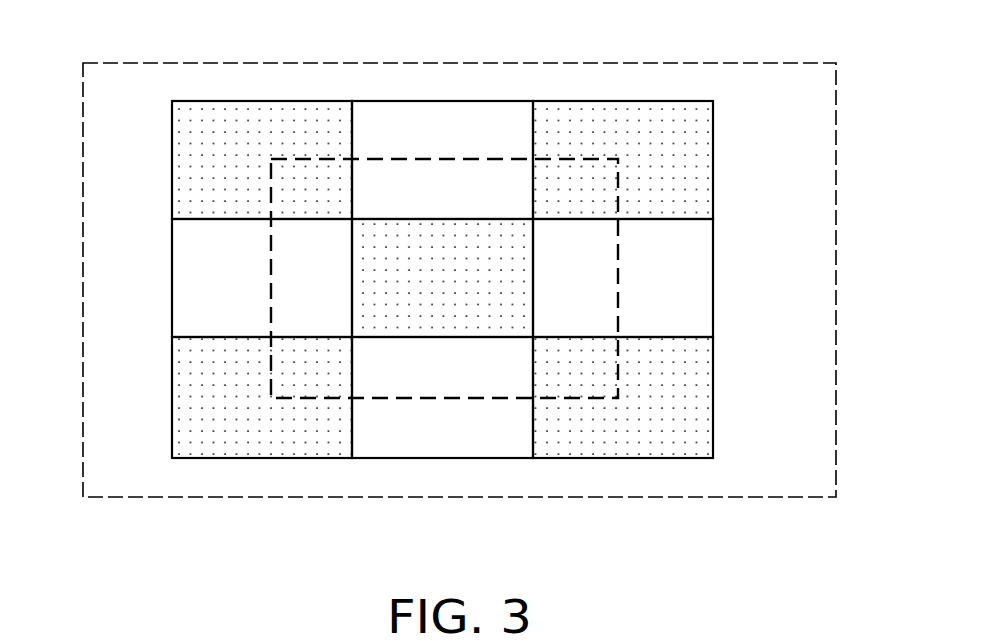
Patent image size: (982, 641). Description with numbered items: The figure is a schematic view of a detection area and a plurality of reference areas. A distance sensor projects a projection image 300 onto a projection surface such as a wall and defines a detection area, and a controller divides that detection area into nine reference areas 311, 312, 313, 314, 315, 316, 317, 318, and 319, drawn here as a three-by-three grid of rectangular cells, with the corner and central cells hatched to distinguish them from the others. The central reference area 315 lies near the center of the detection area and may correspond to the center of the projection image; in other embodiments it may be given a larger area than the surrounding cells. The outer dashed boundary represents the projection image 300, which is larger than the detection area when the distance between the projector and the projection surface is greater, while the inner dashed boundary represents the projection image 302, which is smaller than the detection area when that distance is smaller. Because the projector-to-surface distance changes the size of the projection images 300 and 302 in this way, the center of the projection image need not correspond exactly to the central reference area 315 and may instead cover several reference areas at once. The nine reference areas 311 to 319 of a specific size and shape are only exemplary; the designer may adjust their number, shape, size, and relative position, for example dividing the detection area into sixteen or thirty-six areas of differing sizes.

The projection image 300 is at (650, 498).
The projection image 302 is at (303, 158).
The reference area 311 is at (288, 188).
The reference area 312 is at (293, 257).
The reference area 313 is at (288, 380).
The reference area 314 is at (500, 180).
The central reference area 315 is at (419, 247).
The reference area 316 is at (422, 377).
The reference area 317 is at (592, 185).
The reference area 318 is at (597, 288).
The reference area 319 is at (602, 378).